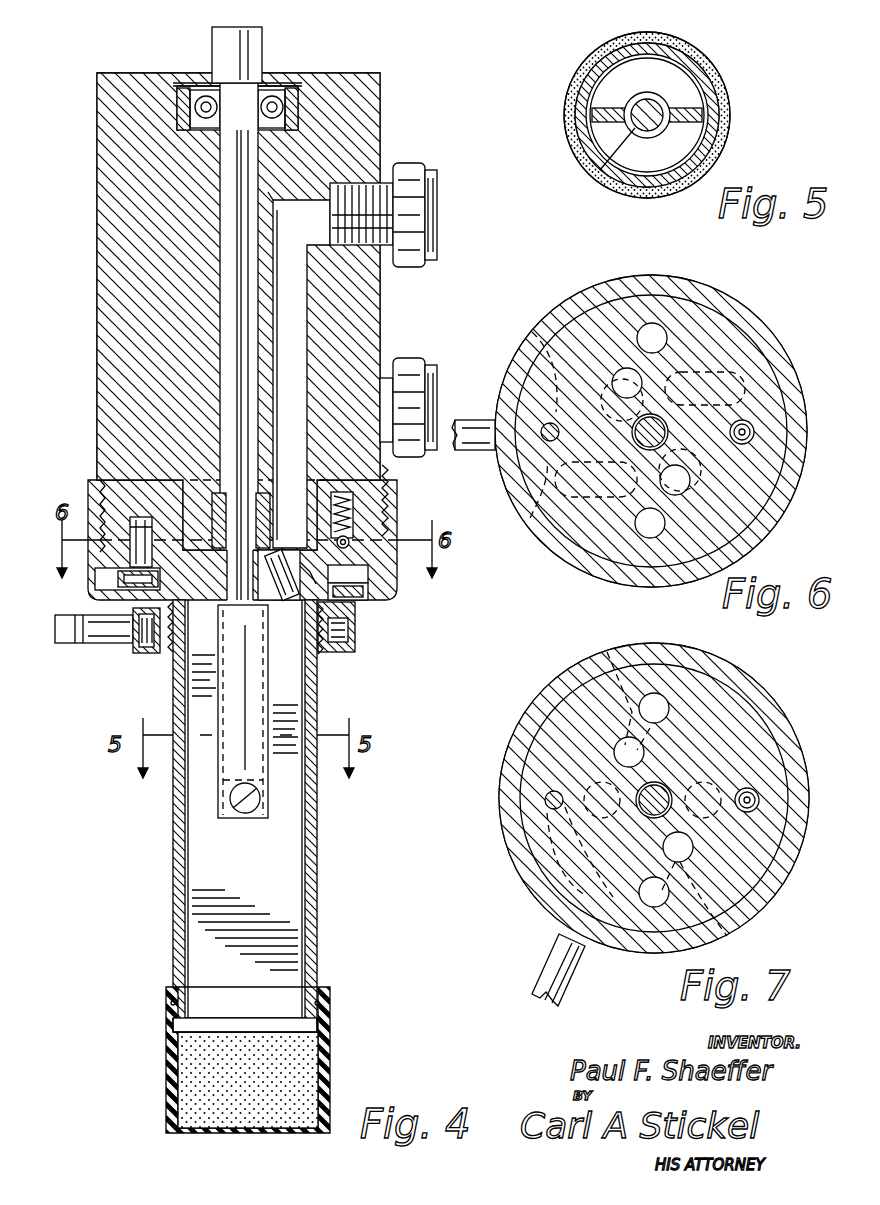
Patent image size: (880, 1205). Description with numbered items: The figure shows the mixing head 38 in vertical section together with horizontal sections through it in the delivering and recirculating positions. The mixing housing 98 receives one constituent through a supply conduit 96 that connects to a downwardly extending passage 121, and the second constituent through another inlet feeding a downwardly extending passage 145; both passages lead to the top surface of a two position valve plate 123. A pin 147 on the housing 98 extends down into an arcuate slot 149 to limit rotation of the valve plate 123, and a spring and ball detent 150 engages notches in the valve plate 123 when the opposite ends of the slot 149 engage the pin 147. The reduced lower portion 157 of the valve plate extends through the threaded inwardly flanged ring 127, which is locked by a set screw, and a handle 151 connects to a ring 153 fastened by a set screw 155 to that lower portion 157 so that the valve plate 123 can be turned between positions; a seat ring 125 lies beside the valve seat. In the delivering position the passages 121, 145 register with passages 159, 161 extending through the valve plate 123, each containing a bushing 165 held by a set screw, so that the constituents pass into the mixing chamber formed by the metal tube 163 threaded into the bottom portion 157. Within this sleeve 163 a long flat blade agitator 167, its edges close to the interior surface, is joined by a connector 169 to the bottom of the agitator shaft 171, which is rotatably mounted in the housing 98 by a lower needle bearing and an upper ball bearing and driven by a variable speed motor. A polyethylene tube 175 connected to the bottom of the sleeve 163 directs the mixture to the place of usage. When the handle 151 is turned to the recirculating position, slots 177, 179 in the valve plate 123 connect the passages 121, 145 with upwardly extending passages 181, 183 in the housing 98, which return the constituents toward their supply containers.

In FIG. 4, the valve head assembly 38 is at (380, 105).
In FIG. 5, the valve head assembly 38 is at (730, 102).
In FIG. 6, the valve head assembly 38 is at (582, 574).
In FIG. 7, the valve head assembly 38 is at (528, 718).
In FIG. 4, the supply conduit 96 is at (430, 182).
In FIG. 4, the mixing housing 98 is at (135, 215).
In FIG. 6, the mixing housing 98 is at (590, 320).
In FIG. 7, the mixing housing 98 is at (530, 783).
In FIG. 4, the downwardly extending passage 121 is at (300, 330).
In FIG. 6, the downwardly extending passage 121 is at (682, 486).
In FIG. 7, the downwardly extending passage 121 is at (684, 848).
In FIG. 4, the two position valve plate 123 is at (368, 572).
In FIG. 4, the seat ring 125 is at (368, 590).
In FIG. 4, the threaded inwardly flanged ring 127 is at (397, 490).
In FIG. 6, the threaded inwardly flanged ring 127 is at (735, 312).
In FIG. 7, the threaded inwardly flanged ring 127 is at (752, 693).
In FIG. 6, the downwardly extending passage 145 is at (633, 380).
In FIG. 7, the downwardly extending passage 145 is at (640, 754).
In FIG. 4, the pin 147 is at (138, 540).
In FIG. 6, the pin 147 is at (548, 440).
In FIG. 7, the pin 147 is at (548, 804).
In FIG. 4, the arcuate slot 149 is at (112, 578).
In FIG. 6, the arcuate slot 149 is at (530, 330).
In FIG. 7, the arcuate slot 149 is at (560, 873).
In FIG. 4, the spring and ball detent 150 is at (350, 540).
In FIG. 6, the spring and ball detent 150 is at (750, 428).
In FIG. 7, the spring and ball detent 150 is at (756, 802).
In FIG. 4, the handle 151 is at (100, 632).
In FIG. 6, the handle 151 is at (485, 422).
In FIG. 7, the handle 151 is at (552, 958).
In FIG. 4, the ring 153 is at (340, 648).
In FIG. 4, the set screw 155 is at (348, 630).
In FIG. 4, the reduced lower portion 157 is at (170, 645).
In FIG. 4, the passage 159 is at (290, 590).
In FIG. 6, the passage 159 is at (700, 456).
In FIG. 7, the passage 159 is at (712, 784).
In FIG. 6, the passage 161 is at (618, 420).
In FIG. 7, the passage 161 is at (592, 783).
In FIG. 4, the metal tube 163 is at (182, 808).
In FIG. 5, the metal tube 163 is at (700, 72).
In FIG. 4, the bushing 165 is at (302, 585).
In FIG. 4, the flat blade agitator 167 is at (270, 928).
In FIG. 5, the flat blade agitator 167 is at (612, 104).
In FIG. 4, the connector 169 is at (262, 782).
In FIG. 5, the connector 169 is at (600, 170).
In FIG. 4, the agitator shaft 171 is at (245, 50).
In FIG. 5, the agitator shaft 171 is at (655, 82).
In FIG. 6, the agitator shaft 171 is at (660, 438).
In FIG. 7, the agitator shaft 171 is at (664, 786).
In FIG. 4, the polyethylene tube 175 is at (170, 1095).
In FIG. 5, the polyethylene tube 175 is at (722, 118).
In FIG. 6, the slot 177 is at (542, 524).
In FIG. 7, the slot 177 is at (733, 936).
In FIG. 6, the slot 179 is at (757, 370).
In FIG. 7, the slot 179 is at (612, 656).
In FIG. 6, the upwardly extending passage 181 is at (652, 532).
In FIG. 7, the upwardly extending passage 181 is at (654, 900).
In FIG. 6, the upwardly extending passage 183 is at (655, 332).
In FIG. 7, the upwardly extending passage 183 is at (656, 700).